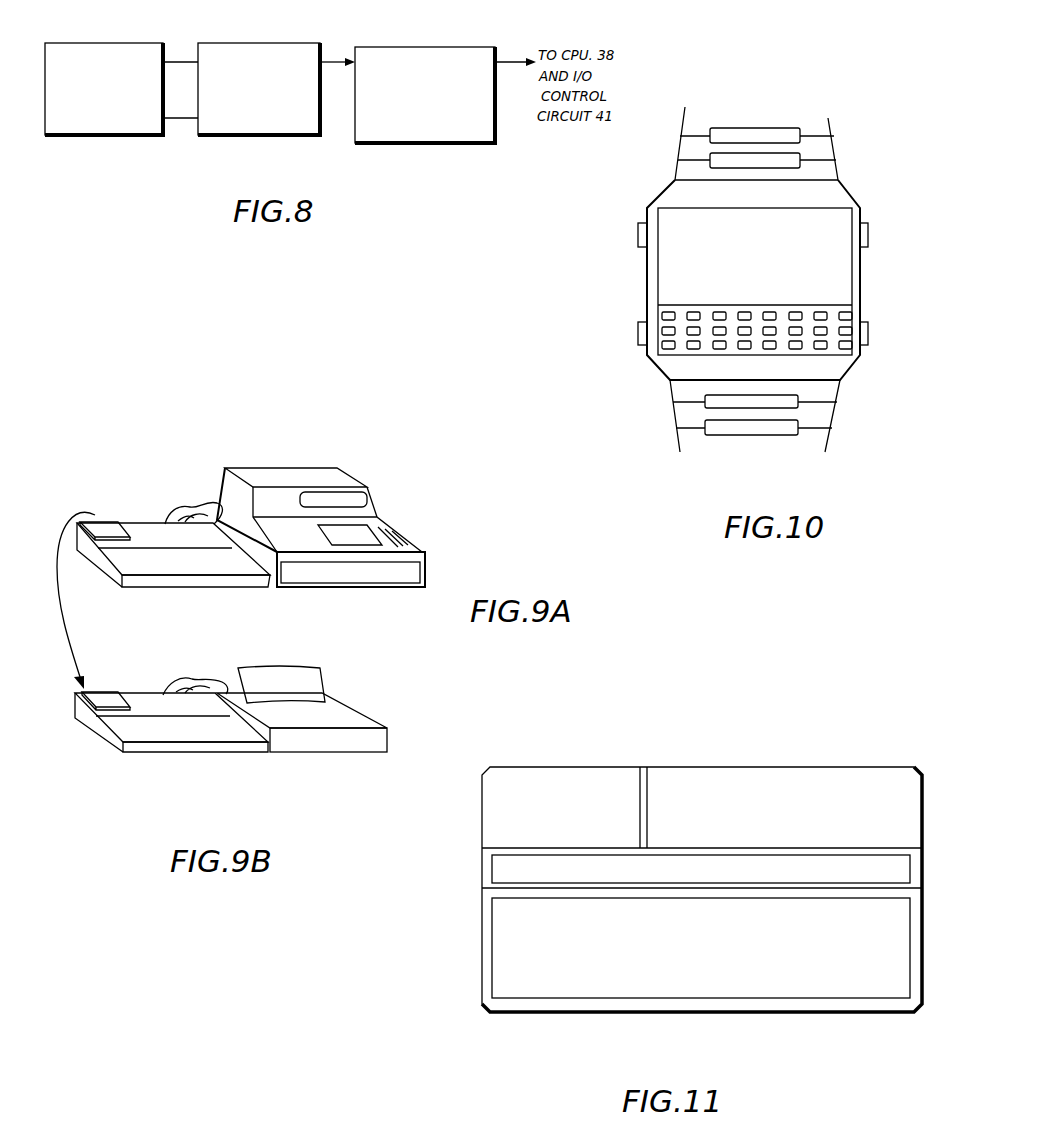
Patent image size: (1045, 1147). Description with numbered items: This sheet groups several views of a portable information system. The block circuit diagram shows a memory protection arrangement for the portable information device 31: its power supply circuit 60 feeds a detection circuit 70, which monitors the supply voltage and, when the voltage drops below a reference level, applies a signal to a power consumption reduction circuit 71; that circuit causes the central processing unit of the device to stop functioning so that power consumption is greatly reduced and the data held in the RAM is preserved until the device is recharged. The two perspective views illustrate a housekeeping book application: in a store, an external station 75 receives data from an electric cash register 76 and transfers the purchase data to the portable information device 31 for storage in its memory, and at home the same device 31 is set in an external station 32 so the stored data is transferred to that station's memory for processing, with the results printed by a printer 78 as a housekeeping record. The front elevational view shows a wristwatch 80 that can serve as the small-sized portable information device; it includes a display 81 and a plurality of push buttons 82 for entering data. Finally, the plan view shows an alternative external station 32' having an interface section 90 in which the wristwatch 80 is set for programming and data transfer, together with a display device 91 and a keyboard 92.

In FIG. 8, the power supply circuit 60 is at (148, 43).
In FIG. 8, the detection circuit 70 is at (277, 47).
In FIG. 8, the power consumption reduction circuit 71 is at (405, 48).
In FIG. 9A, the portable information device 31 is at (106, 531).
In FIG. 9B, the portable information device 31 is at (103, 695).
In FIG. 9A, the external station 75 is at (138, 528).
In FIG. 9A, the electric cash register 76 is at (284, 468).
In FIG. 9B, the external station 32 is at (171, 700).
In FIG. 9B, the printer 78 is at (358, 715).
In FIG. 10, the wristwatch 80 is at (881, 186).
In FIG. 10, the display 81 is at (845, 214).
In FIG. 10, the push buttons 82 is at (845, 345).
In FIG. 11, the external station 32' is at (702, 867).
In FIG. 11, the interface section 90 is at (582, 788).
In FIG. 11, the display device 91 is at (888, 870).
In FIG. 11, the keyboard 92 is at (875, 947).